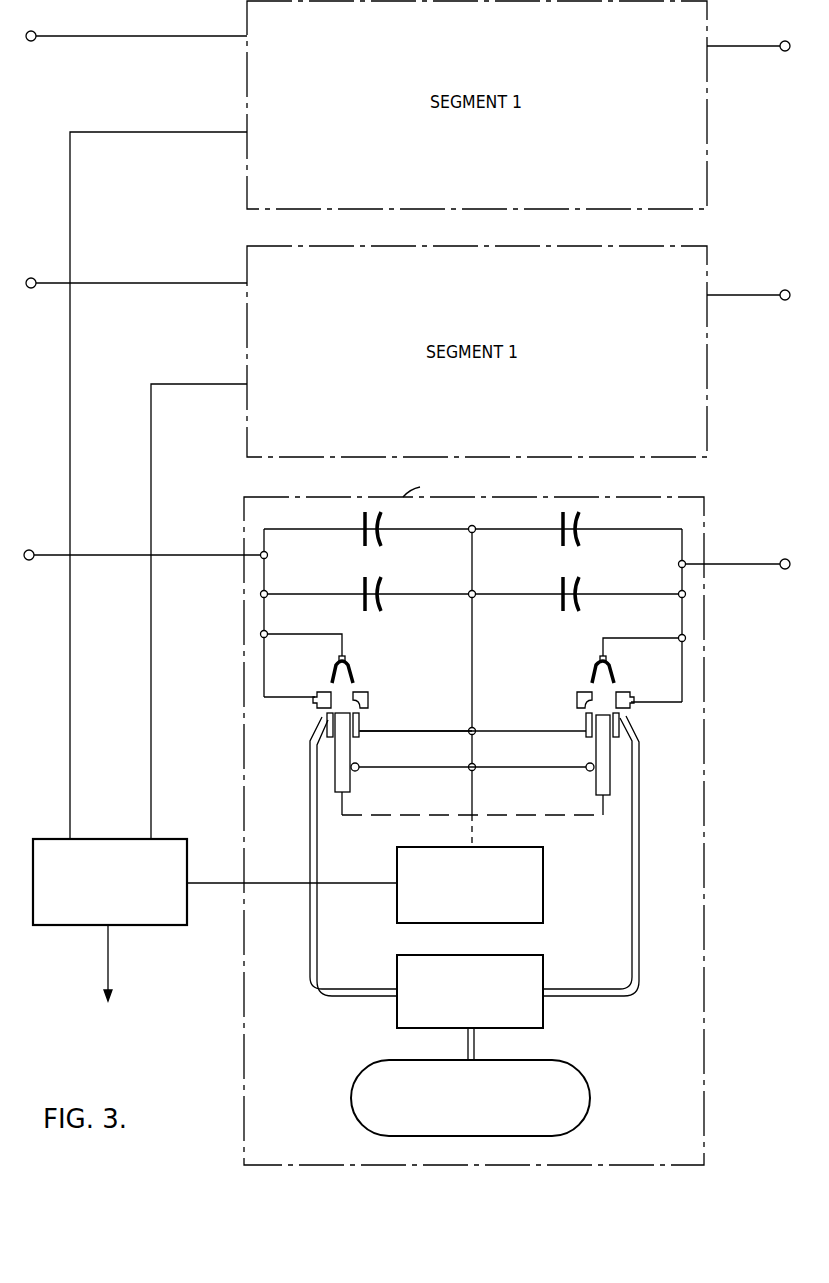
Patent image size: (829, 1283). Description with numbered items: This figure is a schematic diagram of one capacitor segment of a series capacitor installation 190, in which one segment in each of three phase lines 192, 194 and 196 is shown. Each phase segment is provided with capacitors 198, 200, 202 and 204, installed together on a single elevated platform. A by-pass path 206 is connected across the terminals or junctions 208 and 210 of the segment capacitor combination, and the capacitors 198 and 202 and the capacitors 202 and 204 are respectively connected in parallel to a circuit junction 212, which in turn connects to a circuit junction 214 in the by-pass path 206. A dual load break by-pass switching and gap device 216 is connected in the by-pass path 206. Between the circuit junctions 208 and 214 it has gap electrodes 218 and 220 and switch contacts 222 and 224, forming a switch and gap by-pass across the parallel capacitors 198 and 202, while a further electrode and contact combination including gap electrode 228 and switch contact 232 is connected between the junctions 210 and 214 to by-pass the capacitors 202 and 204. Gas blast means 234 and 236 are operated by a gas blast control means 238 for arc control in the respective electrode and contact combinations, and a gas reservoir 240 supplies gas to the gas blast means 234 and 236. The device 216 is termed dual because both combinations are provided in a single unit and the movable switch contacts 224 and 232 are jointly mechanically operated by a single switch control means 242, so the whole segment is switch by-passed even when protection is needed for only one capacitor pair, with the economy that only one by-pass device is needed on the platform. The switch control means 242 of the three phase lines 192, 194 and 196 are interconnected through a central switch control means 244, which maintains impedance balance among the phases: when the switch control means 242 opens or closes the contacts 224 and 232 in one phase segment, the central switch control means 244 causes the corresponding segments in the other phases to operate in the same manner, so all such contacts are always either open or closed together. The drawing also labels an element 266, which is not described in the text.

The series capacitor installation 190 is at (688, 816).
The phase line 192 is at (147, 35).
The phase line 194 is at (176, 274).
The phase line 196 is at (183, 554).
The capacitor 198 is at (383, 522).
The capacitor 200 is at (383, 586).
The capacitor 202 is at (581, 523).
The capacitor 204 is at (581, 587).
The by-pass path 206 is at (260, 634).
The terminal or junction 208 is at (260, 592).
The terminal or junction 210 is at (686, 597).
The circuit junction 212 is at (474, 592).
The circuit junction 214 is at (474, 729).
The dual load break by-pass switching and gap device 216 is at (485, 800).
The gap electrode 218 is at (318, 691).
The gap electrode 220 is at (365, 722).
The switch contact 222 is at (345, 662).
The switch contact 224 is at (352, 785).
The gap electrode 228 is at (624, 691).
The switch contact 232 is at (596, 787).
The gas blast means 234 is at (309, 734).
The gas blast means 236 is at (641, 734).
The gas blast control means 238 is at (544, 958).
The gas reservoir 240 is at (578, 1062).
The switch control means 242 is at (544, 855).
The central switch control means 244 is at (174, 838).
The contact plate 266 is at (586, 724).